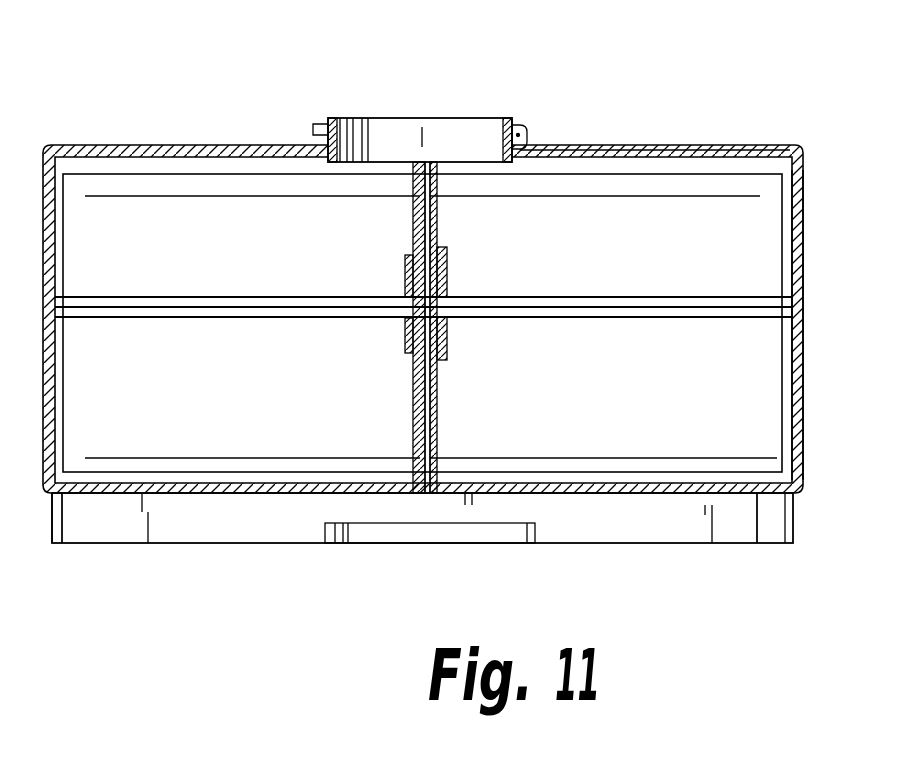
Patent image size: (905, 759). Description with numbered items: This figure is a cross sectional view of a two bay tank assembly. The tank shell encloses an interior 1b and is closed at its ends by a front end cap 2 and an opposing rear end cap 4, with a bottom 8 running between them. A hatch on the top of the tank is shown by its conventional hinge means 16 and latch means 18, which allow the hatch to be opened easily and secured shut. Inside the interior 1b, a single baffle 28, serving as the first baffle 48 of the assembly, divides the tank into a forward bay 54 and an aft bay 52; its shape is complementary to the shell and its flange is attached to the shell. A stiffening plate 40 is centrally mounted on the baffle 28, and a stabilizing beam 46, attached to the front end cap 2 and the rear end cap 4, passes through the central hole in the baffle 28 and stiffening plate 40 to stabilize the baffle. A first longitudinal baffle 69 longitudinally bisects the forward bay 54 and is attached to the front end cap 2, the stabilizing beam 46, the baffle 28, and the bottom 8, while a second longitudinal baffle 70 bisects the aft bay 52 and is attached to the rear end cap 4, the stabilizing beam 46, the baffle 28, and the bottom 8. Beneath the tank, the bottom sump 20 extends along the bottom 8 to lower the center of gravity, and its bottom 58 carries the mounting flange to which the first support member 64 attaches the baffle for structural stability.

The front end cap 2 is at (45, 172).
The rear end cap 4 is at (805, 440).
The bottom 8 is at (757, 545).
The hinge means 16 is at (520, 127).
The interior 1b is at (678, 143).
The latch means 18 is at (323, 118).
The bottom sump 20 is at (70, 523).
The baffle 28 is at (420, 267).
The first baffle 48 is at (412, 200).
The stiffening plate 40 is at (406, 340).
The stabilizing beam 46 is at (197, 297).
The aft bay 52 is at (733, 187).
The forward bay 54 is at (155, 187).
The bottom of the bottom sump 58 is at (567, 545).
The first support member 64 is at (417, 572).
The first longitudinal baffle 69 is at (245, 438).
The second longitudinal baffle 70 is at (658, 433).